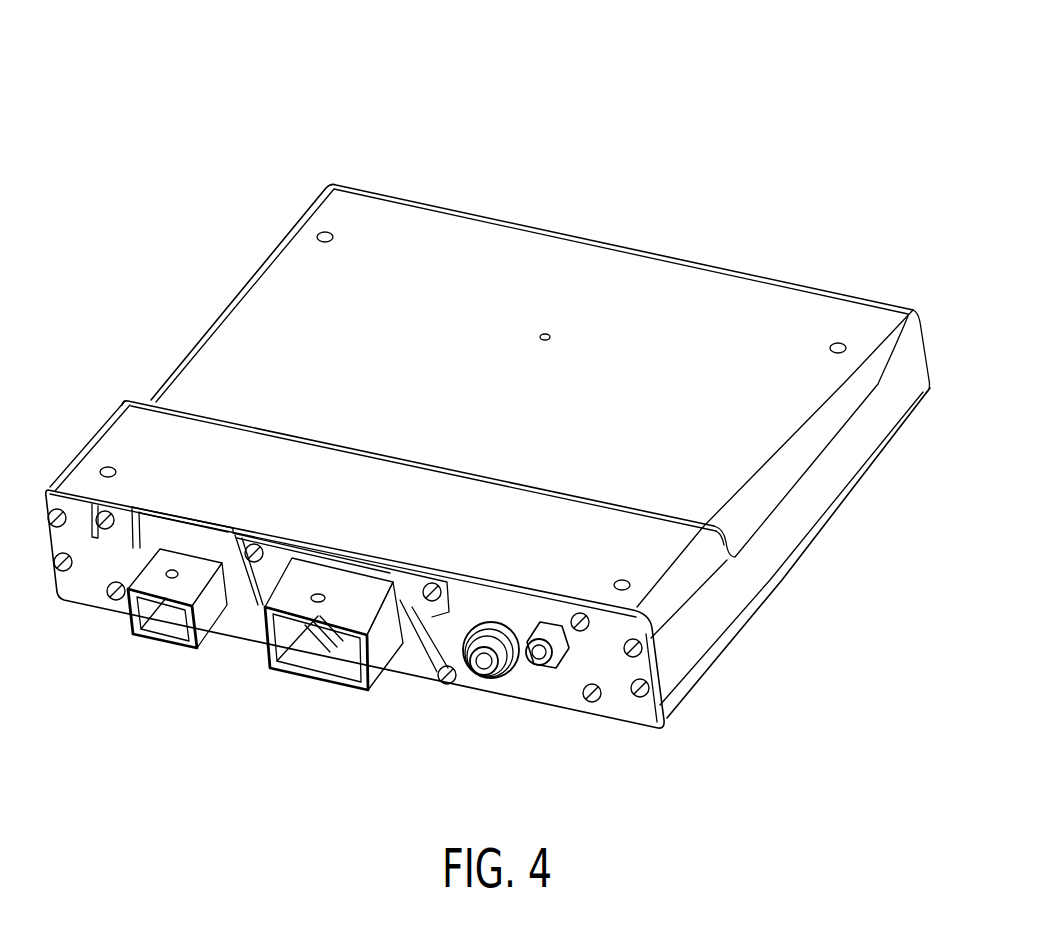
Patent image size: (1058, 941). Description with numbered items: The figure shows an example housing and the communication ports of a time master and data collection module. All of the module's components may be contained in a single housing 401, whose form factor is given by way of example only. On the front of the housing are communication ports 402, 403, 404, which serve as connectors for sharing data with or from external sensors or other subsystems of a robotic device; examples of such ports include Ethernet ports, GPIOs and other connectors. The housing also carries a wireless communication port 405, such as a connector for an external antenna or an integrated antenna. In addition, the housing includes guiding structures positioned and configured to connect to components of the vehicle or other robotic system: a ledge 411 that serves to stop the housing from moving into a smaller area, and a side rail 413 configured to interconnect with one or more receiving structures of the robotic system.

The housing 401 is at (262, 106).
The communication port 402 is at (138, 648).
The communication port 403 is at (320, 668).
The communication port 404 is at (553, 667).
The wireless communication port 405 is at (487, 687).
The ledge 411 is at (113, 437).
The side rail 413 is at (907, 327).